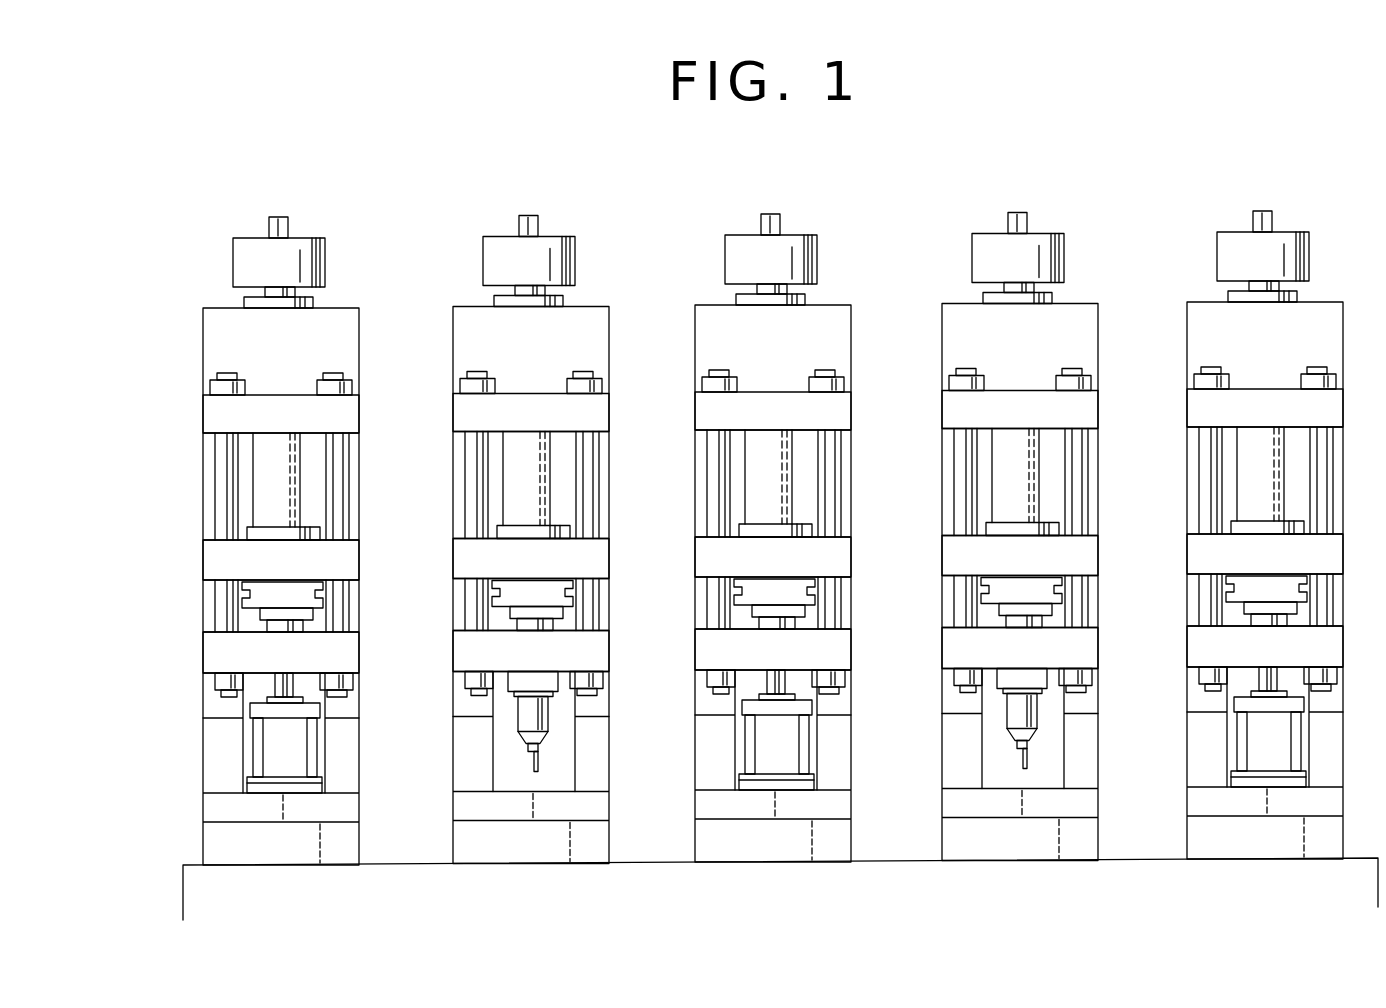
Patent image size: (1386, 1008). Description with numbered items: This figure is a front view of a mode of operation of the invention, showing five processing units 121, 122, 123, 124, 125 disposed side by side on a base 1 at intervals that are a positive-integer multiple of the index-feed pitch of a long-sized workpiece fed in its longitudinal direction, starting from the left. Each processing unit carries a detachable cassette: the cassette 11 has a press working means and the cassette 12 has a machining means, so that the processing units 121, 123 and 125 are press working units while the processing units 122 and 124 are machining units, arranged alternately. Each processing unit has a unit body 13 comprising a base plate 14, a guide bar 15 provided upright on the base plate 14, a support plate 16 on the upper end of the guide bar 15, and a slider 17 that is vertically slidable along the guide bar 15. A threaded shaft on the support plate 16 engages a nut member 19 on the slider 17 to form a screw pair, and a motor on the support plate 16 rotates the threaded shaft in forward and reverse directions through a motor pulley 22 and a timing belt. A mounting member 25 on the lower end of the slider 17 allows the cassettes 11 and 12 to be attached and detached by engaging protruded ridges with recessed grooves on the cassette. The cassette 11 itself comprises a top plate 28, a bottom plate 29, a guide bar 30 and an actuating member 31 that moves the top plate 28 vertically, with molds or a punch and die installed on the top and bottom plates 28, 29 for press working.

The base 1 is at (1358, 878).
The cassette 11 is at (338, 733).
The cassette 12 is at (591, 722).
The unit body 13 is at (334, 248).
The base plate 14 is at (317, 664).
The guide bar 15 is at (320, 530).
The support plate 16 is at (314, 403).
The slider 17 is at (316, 558).
The nut member 19 is at (329, 510).
The motor pulley 22 is at (304, 238).
The mounting member 25 is at (336, 593).
The top plate 28 is at (830, 695).
The bottom plate 29 is at (832, 780).
The guide bar 30 is at (830, 744).
The actuating member 31 is at (837, 670).
The processing unit 121 is at (319, 505).
The processing unit 122 is at (563, 503).
The processing unit 123 is at (810, 501).
The processing unit 124 is at (1031, 499).
The processing unit 125 is at (1265, 496).